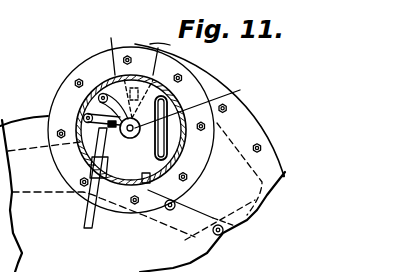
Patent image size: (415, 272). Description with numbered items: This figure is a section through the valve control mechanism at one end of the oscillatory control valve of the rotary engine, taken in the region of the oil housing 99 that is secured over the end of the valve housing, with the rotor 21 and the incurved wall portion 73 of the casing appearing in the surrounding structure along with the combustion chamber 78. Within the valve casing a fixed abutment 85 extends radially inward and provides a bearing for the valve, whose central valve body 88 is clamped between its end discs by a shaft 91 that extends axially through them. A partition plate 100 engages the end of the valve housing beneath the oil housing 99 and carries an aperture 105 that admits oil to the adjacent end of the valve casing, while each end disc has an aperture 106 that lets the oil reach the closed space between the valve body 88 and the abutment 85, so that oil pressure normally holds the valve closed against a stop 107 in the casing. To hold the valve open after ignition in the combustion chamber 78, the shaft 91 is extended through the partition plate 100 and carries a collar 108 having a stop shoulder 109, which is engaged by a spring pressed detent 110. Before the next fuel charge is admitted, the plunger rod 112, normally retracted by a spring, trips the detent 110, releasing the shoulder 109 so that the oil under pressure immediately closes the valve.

The rotor 21 is at (195, 248).
The incurved wall portion 73 is at (185, 240).
The combustion chamber 78 is at (223, 220).
The fixed abutment 85 is at (198, 79).
The valve body 88 is at (99, 93).
The shaft 91 is at (136, 140).
The oil housing 99 is at (115, 45).
The partition plate 100 is at (201, 106).
The aperture 105 is at (232, 161).
The aperture 106 is at (162, 48).
The stop 107 is at (147, 195).
The collar 108 is at (125, 129).
The stop shoulder 109 is at (183, 64).
The spring pressed detent 110 is at (78, 108).
The plunger rod 112 is at (84, 218).